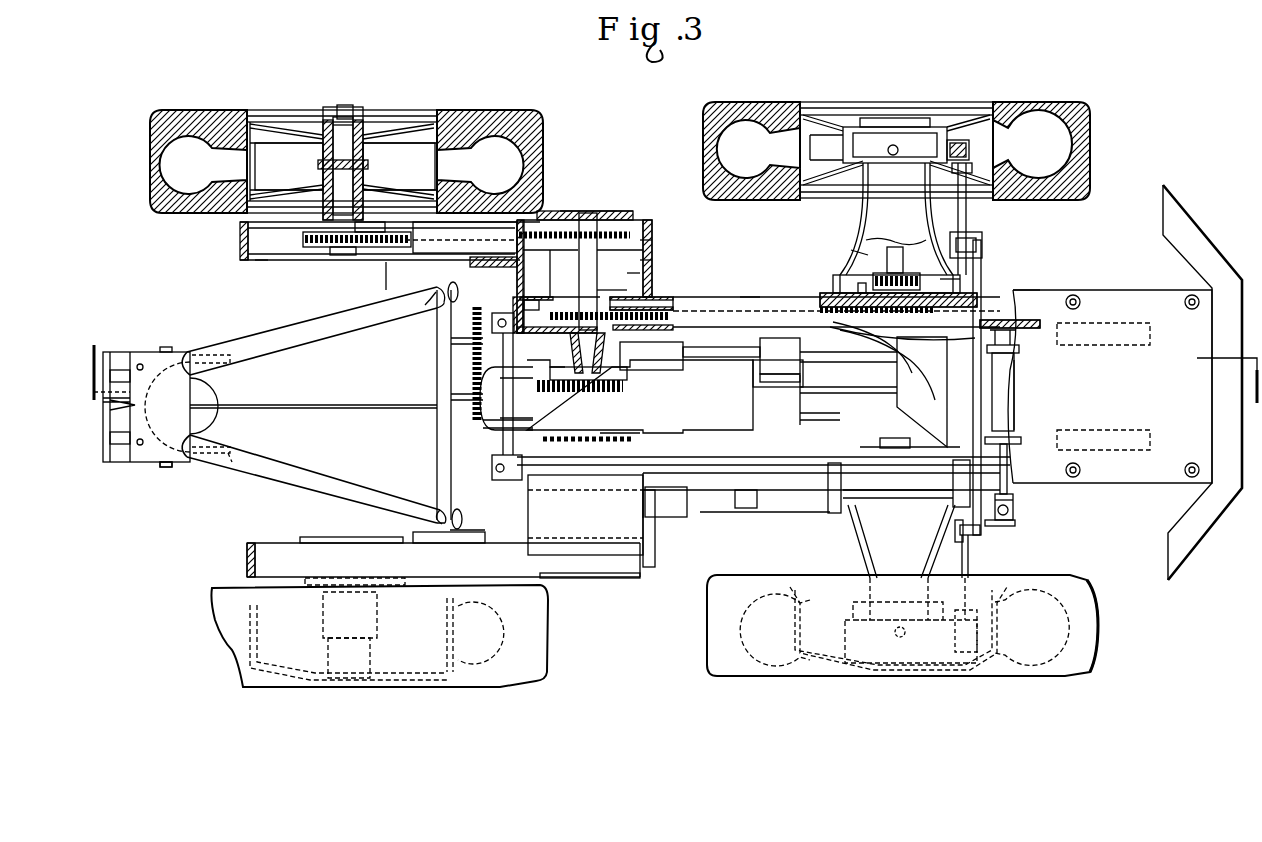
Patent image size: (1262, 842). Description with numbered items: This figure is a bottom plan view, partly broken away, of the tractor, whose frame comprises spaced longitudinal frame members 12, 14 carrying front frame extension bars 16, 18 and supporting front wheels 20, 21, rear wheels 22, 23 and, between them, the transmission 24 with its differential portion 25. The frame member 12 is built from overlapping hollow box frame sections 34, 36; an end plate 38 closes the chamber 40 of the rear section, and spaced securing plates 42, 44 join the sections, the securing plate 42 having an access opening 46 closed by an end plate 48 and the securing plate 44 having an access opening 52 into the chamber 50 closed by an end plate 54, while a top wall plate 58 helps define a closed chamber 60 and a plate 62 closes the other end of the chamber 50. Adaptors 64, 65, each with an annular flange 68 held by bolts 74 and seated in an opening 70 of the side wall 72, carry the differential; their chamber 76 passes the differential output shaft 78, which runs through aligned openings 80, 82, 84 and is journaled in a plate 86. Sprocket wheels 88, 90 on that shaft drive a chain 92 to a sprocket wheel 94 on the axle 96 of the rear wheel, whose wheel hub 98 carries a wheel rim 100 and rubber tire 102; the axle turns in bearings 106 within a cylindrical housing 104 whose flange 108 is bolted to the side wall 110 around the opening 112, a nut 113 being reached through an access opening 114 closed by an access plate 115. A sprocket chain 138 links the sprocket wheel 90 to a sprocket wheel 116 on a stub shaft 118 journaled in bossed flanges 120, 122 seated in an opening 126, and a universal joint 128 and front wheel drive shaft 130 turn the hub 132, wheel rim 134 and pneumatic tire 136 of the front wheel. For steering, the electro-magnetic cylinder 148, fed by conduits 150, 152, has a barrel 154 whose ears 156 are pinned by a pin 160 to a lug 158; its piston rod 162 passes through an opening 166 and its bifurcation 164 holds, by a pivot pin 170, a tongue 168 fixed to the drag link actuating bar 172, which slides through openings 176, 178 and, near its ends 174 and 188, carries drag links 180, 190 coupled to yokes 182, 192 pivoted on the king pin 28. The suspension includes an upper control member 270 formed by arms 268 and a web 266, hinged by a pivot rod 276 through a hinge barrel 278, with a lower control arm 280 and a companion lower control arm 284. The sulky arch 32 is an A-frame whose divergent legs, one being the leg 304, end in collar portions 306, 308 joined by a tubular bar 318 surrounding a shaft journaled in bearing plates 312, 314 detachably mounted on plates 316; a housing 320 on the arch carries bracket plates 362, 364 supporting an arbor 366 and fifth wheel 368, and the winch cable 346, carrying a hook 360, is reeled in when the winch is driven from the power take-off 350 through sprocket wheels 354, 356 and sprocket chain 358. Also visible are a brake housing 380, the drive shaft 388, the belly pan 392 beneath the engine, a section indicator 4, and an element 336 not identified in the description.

The section line 4- 4 is at (675, 375).
The frame member 12 is at (745, 290).
The frame member 14 is at (731, 494).
The frame extension bar 16 is at (1032, 302).
The frame extension bar 18 is at (1034, 471).
The front wheel 20 is at (1040, 96).
The front wheel 21 is at (1022, 679).
The rear wheel 22 is at (243, 108).
The rear wheel 23 is at (458, 690).
The transmission 24 is at (692, 366).
The differential portion 25 is at (502, 461).
The king pin 28 is at (893, 145).
The sulky arch 32 is at (266, 323).
The box frame section 34 is at (755, 300).
The box frame section 36 is at (268, 265).
The end plate 38 is at (252, 256).
The chamber 40 is at (262, 263).
The securing plate 42 is at (646, 261).
The securing plate 44 is at (512, 266).
The access opening 46 is at (651, 226).
The end plate 48 is at (656, 241).
The chamber 50 is at (661, 301).
The access opening 52 is at (536, 301).
The end plate 54 is at (520, 312).
The top wall plate 58 is at (548, 528).
The closed chamber 60 is at (641, 273).
The plate 62 is at (985, 291).
The adaptor 64 is at (562, 380).
The adaptor 65 is at (621, 430).
The annular flange 68 is at (642, 368).
The opening 70 is at (561, 314).
The side wall 72 is at (682, 352).
The bolts 74 is at (572, 440).
The chamber 76 is at (581, 393).
The differential output shaft 78 is at (592, 278).
The opening 80 is at (601, 291).
The opening 82 is at (581, 266).
The opening 84 is at (618, 214).
The plate 86 is at (596, 212).
The sprocket wheel 88 is at (561, 213).
The sprocket wheel 90 is at (627, 289).
The chain 92 is at (416, 238).
The sprocket wheel 94 is at (332, 250).
The axle 96 is at (347, 200).
The wheel hub 98 is at (358, 124).
The wheel rim 100 is at (405, 126).
The rubber tire 102 is at (188, 122).
The cylindrical housing 104 is at (322, 172).
The bearings 106 is at (362, 170).
The flange 108 is at (278, 233).
The side wall 110 is at (246, 225).
The opening 112 is at (312, 247).
The nut 113 is at (341, 249).
The access opening 114 is at (386, 292).
The access plate 115 is at (362, 292).
The sprocket wheel 116 is at (862, 295).
The stub shaft 118 is at (922, 392).
The bossed flange 120 is at (872, 290).
The bossed flange 122 is at (862, 331).
The opening 126 is at (906, 312).
The universal joint 128 is at (930, 252).
The front wheel drive shaft 130 is at (894, 247).
The hub 132 is at (856, 140).
The wheel rim 134 is at (961, 106).
The pneumatic tire 136 is at (746, 105).
The sprocket chain 138 is at (812, 320).
The electro-magnetic cylinder 148 is at (1016, 396).
The conduit 150 is at (742, 362).
The conduit 152 is at (760, 392).
The barrel 154 is at (1006, 380).
The ears 156 is at (1016, 351).
The lug 158 is at (1011, 318).
The pin 160 is at (1045, 339).
The piston rod 162 is at (1012, 490).
The bifurcation 164 is at (1015, 506).
The opening 166 is at (1042, 446).
The tongue 168 is at (1012, 514).
The pivot pin 170 is at (1017, 510).
The drag link actuating bar 172 is at (1012, 412).
The end 174 is at (982, 534).
The opening 176 is at (996, 319).
The opening 178 is at (962, 462).
The drag link 180 is at (963, 560).
The yoke 182 is at (970, 652).
The end 188 is at (987, 242).
The drag link 190 is at (990, 207).
The yoke 192 is at (975, 149).
The web portion 266 is at (866, 241).
The spaced parallel arms 268 is at (861, 213).
The upper control member 270 is at (851, 255).
The pivot rod 276 is at (811, 300).
The hinge barrel 278 is at (950, 279).
The lower control arm 280 is at (858, 226).
The lower control arm 284 is at (858, 556).
The leg 304 is at (290, 332).
The collar portion 306 is at (430, 302).
The collar portion 308 is at (436, 508).
The bearing plate 312 is at (461, 265).
The bearing plate 314 is at (462, 538).
The plate 316 is at (447, 262).
The tubular bar 318 is at (440, 428).
The housing 320 is at (160, 352).
The rail 336 is at (927, 420).
The cable 346 is at (316, 403).
The power take-off 350 is at (512, 438).
The sprocket wheel 354 is at (470, 394).
The sprocket 356 is at (470, 340).
The sprocket chain 358 is at (470, 366).
The hook 360 is at (160, 388).
The bracket plate 362 is at (240, 360).
The bracket plate 364 is at (228, 461).
The arbor 366 is at (162, 466).
The fifth wheel 368 is at (212, 397).
The brake housing 380 is at (667, 347).
The drive shaft 388 is at (866, 396).
The belly plate 392 is at (1133, 298).